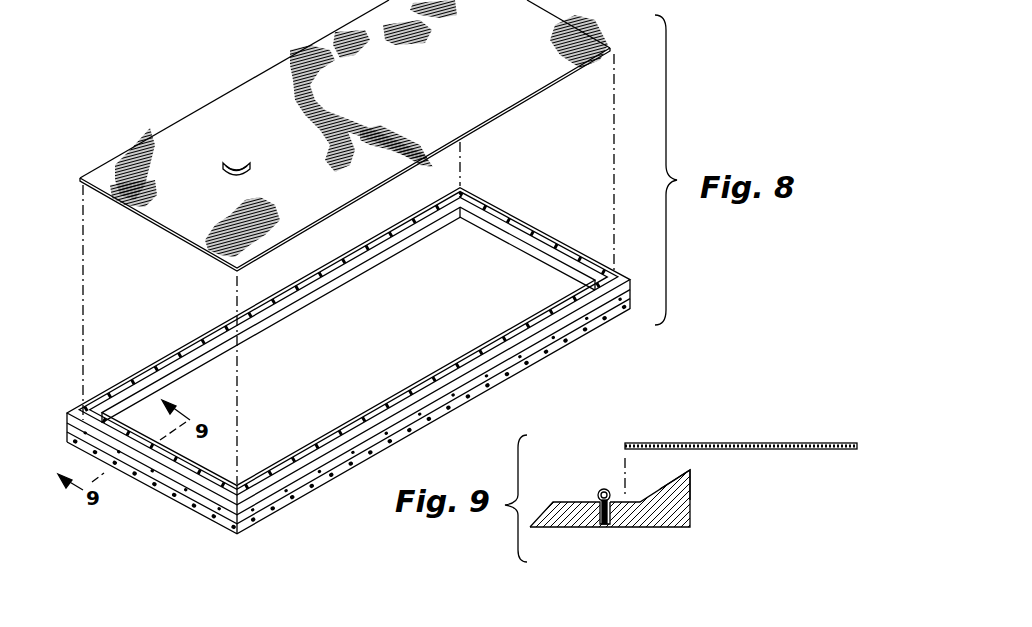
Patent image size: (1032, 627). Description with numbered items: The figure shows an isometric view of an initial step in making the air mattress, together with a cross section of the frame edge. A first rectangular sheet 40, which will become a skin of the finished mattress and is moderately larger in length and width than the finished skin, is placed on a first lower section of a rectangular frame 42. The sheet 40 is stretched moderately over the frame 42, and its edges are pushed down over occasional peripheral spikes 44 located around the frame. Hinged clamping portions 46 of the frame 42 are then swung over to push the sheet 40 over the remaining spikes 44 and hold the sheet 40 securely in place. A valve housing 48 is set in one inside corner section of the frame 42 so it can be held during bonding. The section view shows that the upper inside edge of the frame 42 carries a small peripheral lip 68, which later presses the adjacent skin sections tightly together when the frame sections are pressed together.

In FIG. 8, the first rectangular sheet 40 is at (196, 110).
In FIG. 9, the first rectangular sheet 40 is at (718, 443).
In FIG. 8, the rectangular frame 42 is at (321, 505).
In FIG. 9, the rectangular frame 42 is at (660, 536).
In FIG. 8, the peripheral spikes 44 is at (268, 313).
In FIG. 9, the peripheral spikes 44 is at (666, 476).
In FIG. 8, the hinged clamping portions 46 is at (175, 350).
In FIG. 9, the hinged clamping portions 46 is at (569, 528).
In FIG. 8, the valve housing 48 is at (244, 160).
In FIG. 8, the peripheral lip 68 is at (210, 360).
In FIG. 9, the peripheral lip 68 is at (691, 470).